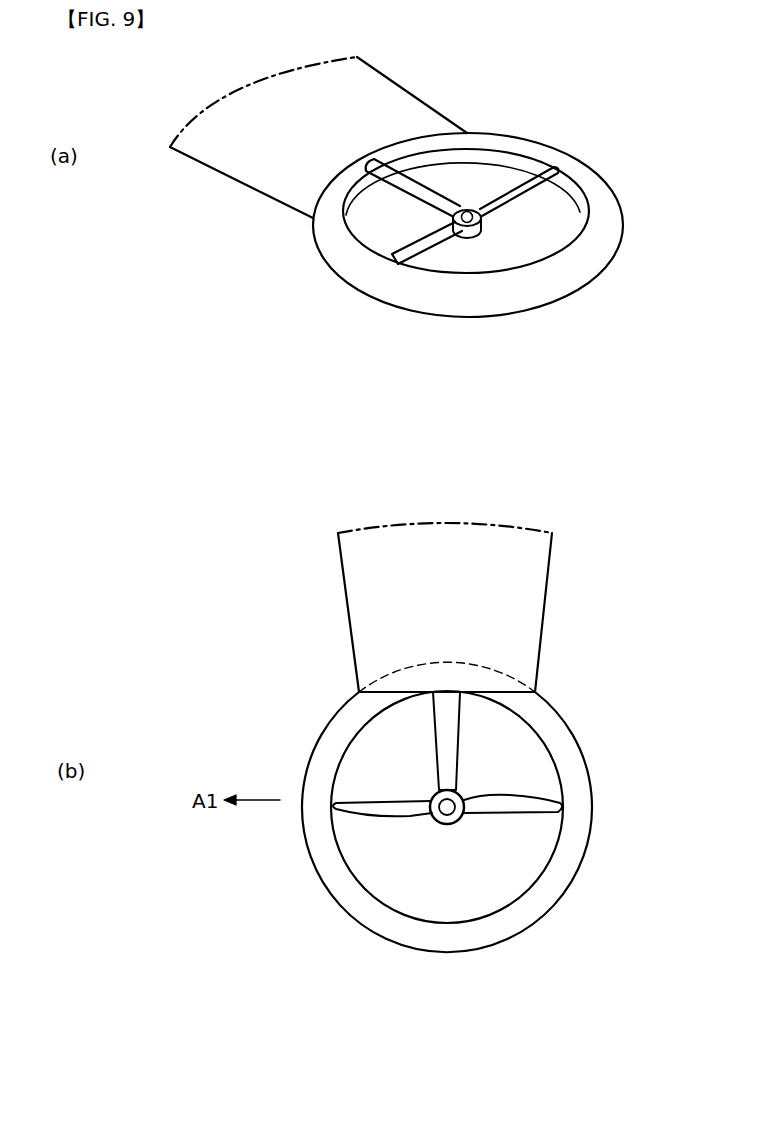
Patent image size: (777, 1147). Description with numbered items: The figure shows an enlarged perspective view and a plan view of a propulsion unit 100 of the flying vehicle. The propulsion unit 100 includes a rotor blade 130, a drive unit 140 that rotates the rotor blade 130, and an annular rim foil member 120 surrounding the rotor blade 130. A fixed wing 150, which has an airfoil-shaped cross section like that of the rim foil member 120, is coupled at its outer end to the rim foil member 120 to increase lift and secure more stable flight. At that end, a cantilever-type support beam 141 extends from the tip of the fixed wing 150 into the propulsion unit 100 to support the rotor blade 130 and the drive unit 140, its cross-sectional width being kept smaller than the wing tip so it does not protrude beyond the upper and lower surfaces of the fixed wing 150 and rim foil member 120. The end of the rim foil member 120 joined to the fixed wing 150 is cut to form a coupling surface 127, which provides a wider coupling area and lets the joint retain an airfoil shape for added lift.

The propulsion unit 100 is at (593, 146).
The rim foil member 120 is at (527, 297).
The coupling surface 127 is at (482, 692).
The rotor blade 130 is at (523, 188).
The drive unit 140 is at (463, 244).
The support beam 141 is at (398, 193).
The fixed wing 150 is at (255, 158).